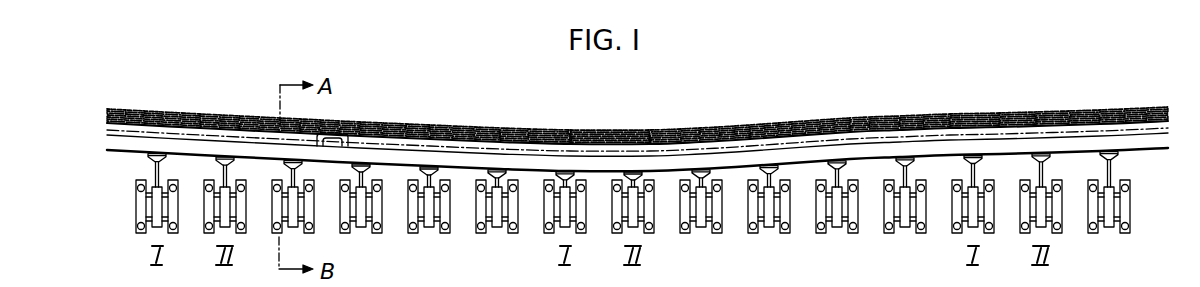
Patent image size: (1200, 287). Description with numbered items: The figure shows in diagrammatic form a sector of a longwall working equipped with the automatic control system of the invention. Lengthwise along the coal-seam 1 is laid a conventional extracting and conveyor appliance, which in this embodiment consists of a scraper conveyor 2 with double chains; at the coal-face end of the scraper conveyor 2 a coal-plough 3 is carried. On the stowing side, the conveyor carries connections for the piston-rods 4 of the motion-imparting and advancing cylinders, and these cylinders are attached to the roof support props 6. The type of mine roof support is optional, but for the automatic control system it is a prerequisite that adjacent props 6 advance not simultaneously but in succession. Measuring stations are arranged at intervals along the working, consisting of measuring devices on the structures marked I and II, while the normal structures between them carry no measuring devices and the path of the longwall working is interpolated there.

The coal-seam 1 is at (834, 126).
The scraper conveyor 2 is at (1143, 145).
The coal-plough 3 is at (328, 147).
The piston-rods 4 is at (290, 169).
The roof support props 6 is at (362, 237).